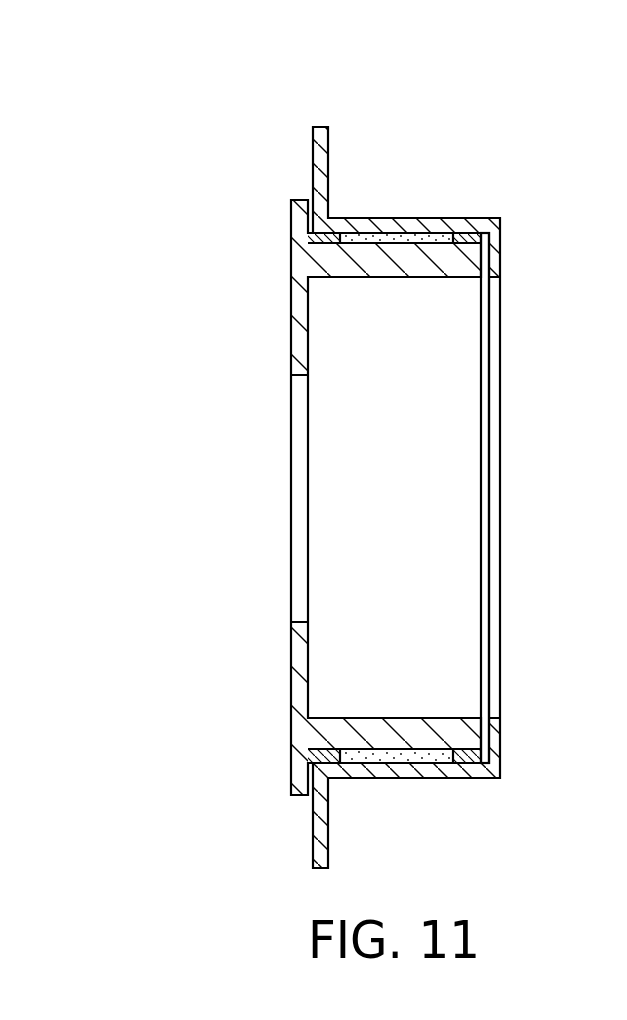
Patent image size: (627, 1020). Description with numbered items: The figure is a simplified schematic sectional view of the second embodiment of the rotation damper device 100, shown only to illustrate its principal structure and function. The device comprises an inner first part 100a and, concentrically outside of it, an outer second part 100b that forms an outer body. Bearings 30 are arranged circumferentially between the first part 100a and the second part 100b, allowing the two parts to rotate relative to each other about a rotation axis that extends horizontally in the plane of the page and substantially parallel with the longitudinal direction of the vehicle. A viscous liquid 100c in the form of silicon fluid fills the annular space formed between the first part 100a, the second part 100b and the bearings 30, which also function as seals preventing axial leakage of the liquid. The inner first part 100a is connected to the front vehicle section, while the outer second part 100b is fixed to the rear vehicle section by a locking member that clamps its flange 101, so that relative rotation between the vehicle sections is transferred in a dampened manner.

The rotation damper device 100 is at (461, 112).
The first part 100a is at (302, 263).
The second part 100b is at (502, 223).
The viscous liquid 100c is at (395, 240).
The flange 101 is at (320, 835).
The bearings 30 is at (480, 764).